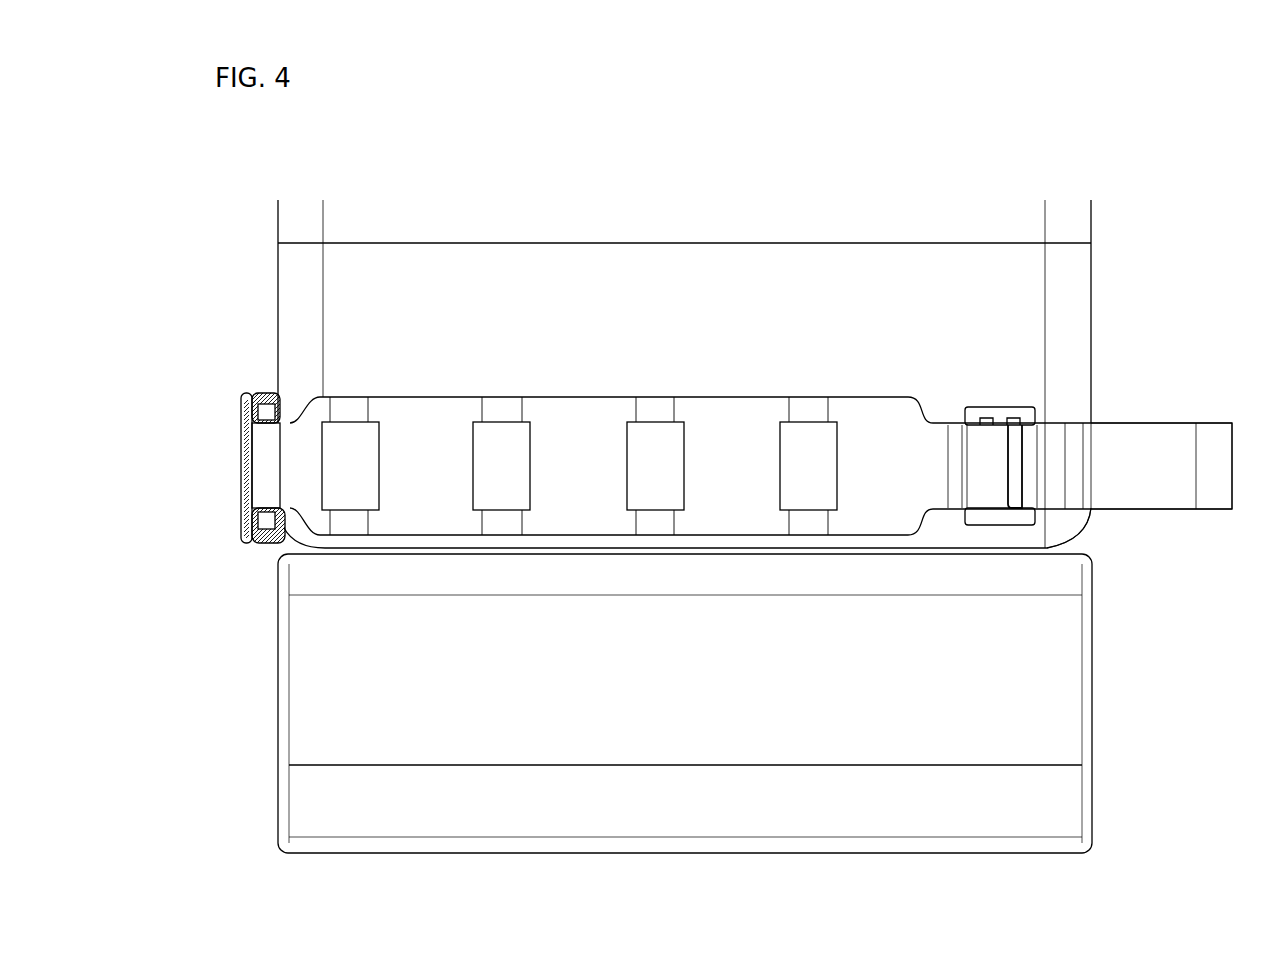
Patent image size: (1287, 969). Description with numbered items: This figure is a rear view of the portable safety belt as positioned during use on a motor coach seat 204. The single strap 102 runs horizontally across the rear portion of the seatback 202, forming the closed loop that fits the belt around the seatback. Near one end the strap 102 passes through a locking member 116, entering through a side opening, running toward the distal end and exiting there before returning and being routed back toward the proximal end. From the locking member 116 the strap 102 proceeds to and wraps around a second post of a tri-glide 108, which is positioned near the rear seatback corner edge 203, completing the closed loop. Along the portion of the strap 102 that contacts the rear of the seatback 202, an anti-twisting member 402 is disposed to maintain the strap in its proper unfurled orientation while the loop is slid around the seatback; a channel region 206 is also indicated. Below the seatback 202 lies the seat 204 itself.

The strap 102 is at (503, 447).
The tri-glide 108 is at (987, 410).
The locking member 116 is at (237, 532).
The seatback 202 is at (1013, 289).
The rear seatback corner edge 203 is at (1103, 528).
The motor coach seat 204 is at (1047, 678).
The band channel 206 is at (268, 345).
The anti-twisting member 402 is at (408, 415).